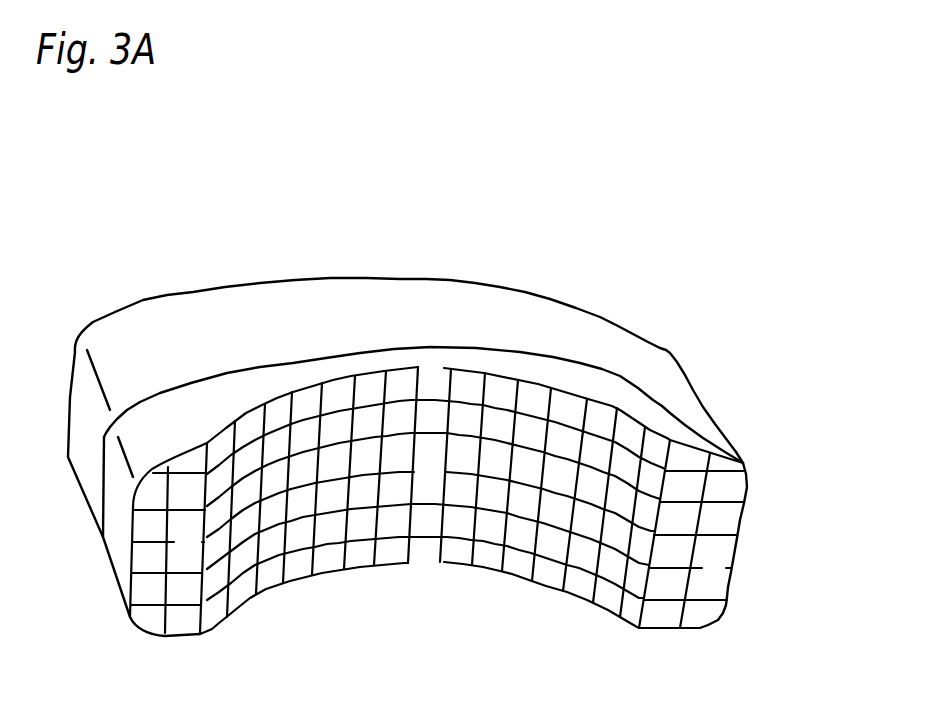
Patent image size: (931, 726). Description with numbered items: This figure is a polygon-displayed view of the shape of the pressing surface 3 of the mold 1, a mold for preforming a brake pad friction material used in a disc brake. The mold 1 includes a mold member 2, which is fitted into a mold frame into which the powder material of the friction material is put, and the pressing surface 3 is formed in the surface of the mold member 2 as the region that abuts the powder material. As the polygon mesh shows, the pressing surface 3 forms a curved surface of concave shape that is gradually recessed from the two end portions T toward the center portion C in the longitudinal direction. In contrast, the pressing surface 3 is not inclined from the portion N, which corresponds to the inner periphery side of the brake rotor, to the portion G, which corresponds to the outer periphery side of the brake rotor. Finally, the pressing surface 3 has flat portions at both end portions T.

The mold 1 is at (733, 649).
The mold member 2 is at (672, 378).
The pressing surface 3 is at (513, 563).
The portion corresponding to outer periphery side of brake rotor G is at (440, 398).
The center portion C is at (420, 483).
The portion corresponding to inner periphery side of brake rotor N is at (415, 578).
The end portion T is at (197, 565).